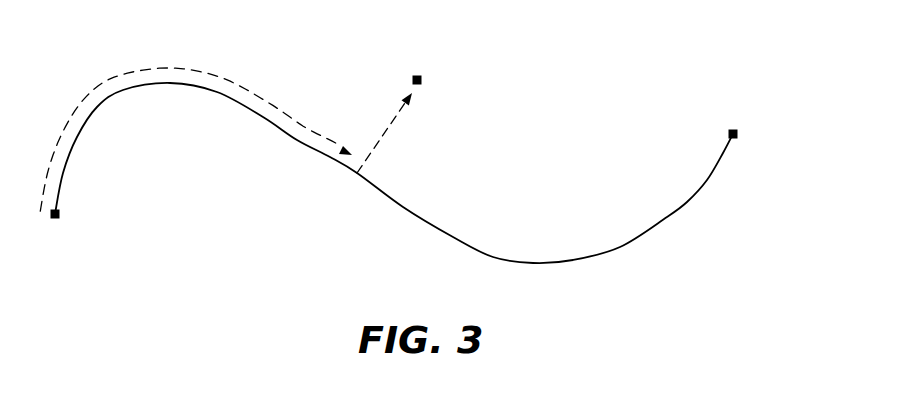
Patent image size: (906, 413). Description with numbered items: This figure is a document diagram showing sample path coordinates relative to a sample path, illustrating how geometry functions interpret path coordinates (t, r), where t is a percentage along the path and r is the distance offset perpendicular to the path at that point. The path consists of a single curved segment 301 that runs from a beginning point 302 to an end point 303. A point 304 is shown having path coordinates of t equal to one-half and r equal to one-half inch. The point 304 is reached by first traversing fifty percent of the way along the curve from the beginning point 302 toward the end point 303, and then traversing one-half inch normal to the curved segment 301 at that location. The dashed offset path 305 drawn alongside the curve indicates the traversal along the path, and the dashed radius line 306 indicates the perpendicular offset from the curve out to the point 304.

The curved segment 301 is at (407, 173).
The beginning point 302 is at (89, 231).
The end point 303 is at (768, 120).
The point 304 is at (451, 65).
The offset dashed path along curve 305 is at (196, 125).
The radius line from curve point 306 is at (422, 137).